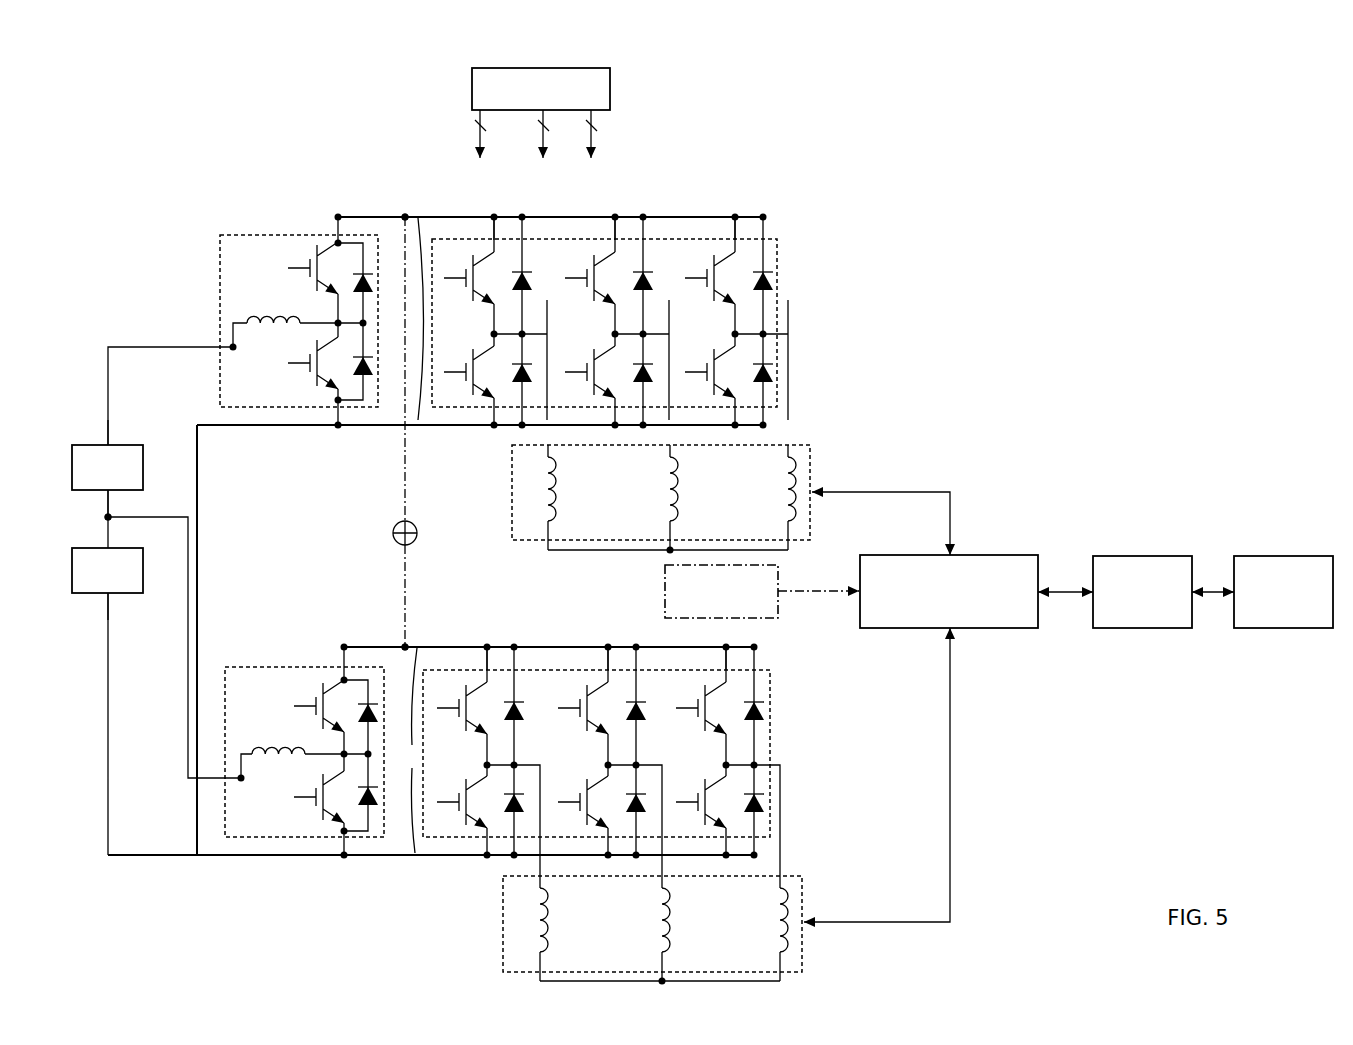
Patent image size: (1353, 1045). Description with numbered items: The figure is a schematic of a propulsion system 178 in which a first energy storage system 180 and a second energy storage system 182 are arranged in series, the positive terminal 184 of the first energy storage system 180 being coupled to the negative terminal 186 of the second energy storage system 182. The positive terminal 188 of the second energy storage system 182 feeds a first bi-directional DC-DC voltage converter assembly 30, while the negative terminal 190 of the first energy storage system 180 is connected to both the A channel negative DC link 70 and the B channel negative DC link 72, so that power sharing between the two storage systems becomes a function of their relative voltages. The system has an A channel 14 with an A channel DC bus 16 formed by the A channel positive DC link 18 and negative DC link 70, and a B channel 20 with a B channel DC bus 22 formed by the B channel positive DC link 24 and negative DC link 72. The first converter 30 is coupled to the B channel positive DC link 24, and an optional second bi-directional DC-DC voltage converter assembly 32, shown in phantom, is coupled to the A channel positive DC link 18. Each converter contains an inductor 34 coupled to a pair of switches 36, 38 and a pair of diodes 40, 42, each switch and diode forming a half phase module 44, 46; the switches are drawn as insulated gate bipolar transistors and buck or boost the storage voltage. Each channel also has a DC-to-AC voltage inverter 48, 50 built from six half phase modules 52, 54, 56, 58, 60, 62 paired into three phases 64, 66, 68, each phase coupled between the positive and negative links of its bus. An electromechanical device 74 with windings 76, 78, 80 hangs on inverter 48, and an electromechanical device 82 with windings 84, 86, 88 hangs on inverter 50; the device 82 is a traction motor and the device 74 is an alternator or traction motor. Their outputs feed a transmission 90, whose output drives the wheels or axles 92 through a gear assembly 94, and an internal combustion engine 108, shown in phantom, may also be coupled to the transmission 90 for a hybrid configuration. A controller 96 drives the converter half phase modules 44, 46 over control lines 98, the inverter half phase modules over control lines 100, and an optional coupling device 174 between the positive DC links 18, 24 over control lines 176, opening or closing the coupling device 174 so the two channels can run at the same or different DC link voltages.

The A channel 14 is at (300, 628).
The A channel DC bus 16 is at (405, 750).
The A channel positive DC link 18 is at (404, 646).
The B channel 20 is at (308, 183).
The B channel DC bus 22 is at (410, 319).
The B channel positive DC link 24 is at (405, 216).
The first bi-directional DC-DC voltage converter assembly 30 is at (258, 236).
The second bi-directional DC-DC voltage converter assembly 32 is at (252, 668).
The inductor 34 is at (258, 316).
The switch 36 is at (302, 276).
The switch 38 is at (302, 371).
The diode 40 is at (369, 286).
The diode 42 is at (369, 372).
The half phase module 44 is at (286, 256).
The half phase module 46 is at (286, 350).
The DC-to-AC voltage inverter 48 is at (772, 692).
The DC-to-AC voltage inverter 50 is at (779, 262).
The half phase module 52 is at (472, 252).
The half phase module 54 is at (593, 252).
The half phase module 56 is at (713, 252).
The half phase module 58 is at (472, 344).
The half phase module 60 is at (593, 344).
The half phase module 62 is at (713, 344).
The phase 64 is at (500, 210).
The phase 66 is at (620, 210).
The phase 68 is at (735, 211).
The A channel negative DC link 70 is at (406, 857).
The B channel negative DC link 72 is at (404, 428).
The electromechanical device 74 is at (502, 938).
The winding 76 is at (550, 918).
The winding 78 is at (672, 918).
The winding 80 is at (778, 908).
The electromechanical device 82 is at (511, 505).
The winding 84 is at (558, 488).
The winding 86 is at (680, 488).
The winding 88 is at (786, 480).
The transmission 90 is at (994, 628).
The driving wheels or axles 92 is at (1276, 628).
The gear assembly 94 is at (1136, 628).
The controller 96 is at (472, 96).
The control lines 98 is at (543, 120).
The control lines 100 is at (591, 125).
The internal combustion engine 108 is at (665, 596).
The coupling device 174 is at (417, 528).
The control lines 176 is at (480, 120).
The propulsion system 178 is at (148, 151).
The first energy storage system 180 is at (145, 569).
The second energy storage system 182 is at (145, 466).
The positive terminal 184 is at (106, 543).
The negative terminal 186 is at (112, 493).
The positive terminal 188 is at (108, 442).
The negative terminal 190 is at (112, 598).